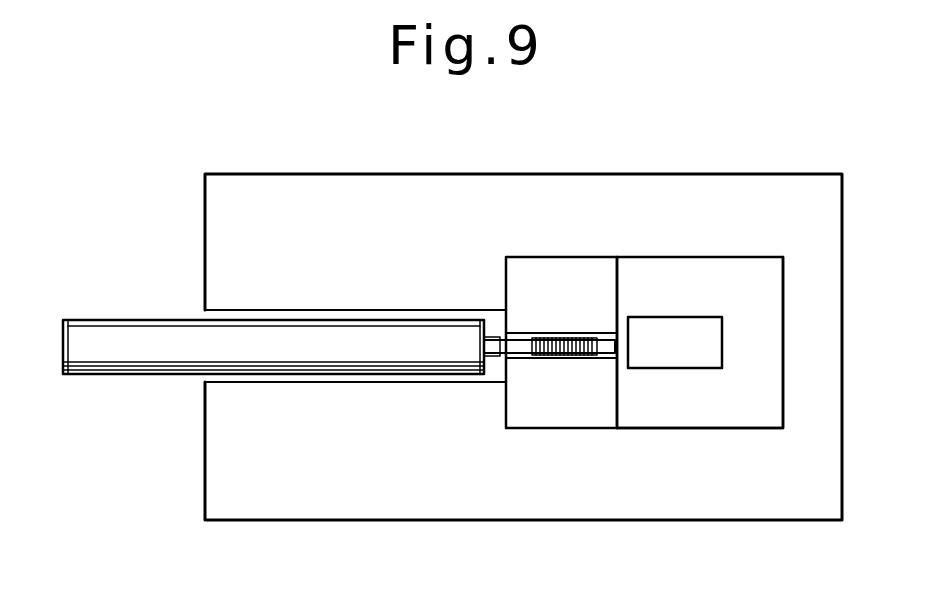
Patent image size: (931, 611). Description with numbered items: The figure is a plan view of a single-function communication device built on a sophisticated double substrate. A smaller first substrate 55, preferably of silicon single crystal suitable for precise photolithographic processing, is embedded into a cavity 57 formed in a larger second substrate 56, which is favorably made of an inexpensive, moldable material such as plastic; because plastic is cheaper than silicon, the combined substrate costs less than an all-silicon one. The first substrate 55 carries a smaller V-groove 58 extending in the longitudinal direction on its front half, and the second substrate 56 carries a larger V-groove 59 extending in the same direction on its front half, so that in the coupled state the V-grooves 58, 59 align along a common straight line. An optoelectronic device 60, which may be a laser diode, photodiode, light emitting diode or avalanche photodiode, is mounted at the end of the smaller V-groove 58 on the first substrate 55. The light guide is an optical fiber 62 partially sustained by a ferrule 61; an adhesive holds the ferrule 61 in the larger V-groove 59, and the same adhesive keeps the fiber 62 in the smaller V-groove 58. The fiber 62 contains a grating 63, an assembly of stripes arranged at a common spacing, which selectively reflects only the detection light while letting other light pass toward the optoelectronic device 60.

The first substrate 55 is at (695, 396).
The second substrate 56 is at (660, 470).
The cavity 57 is at (745, 428).
The smaller V-groove 58 is at (573, 333).
The larger V-groove 59 is at (421, 378).
The optoelectronic device 60 is at (655, 350).
The ferrule 61 is at (343, 355).
The optical fiber 62 is at (604, 351).
The grating 63 is at (549, 357).